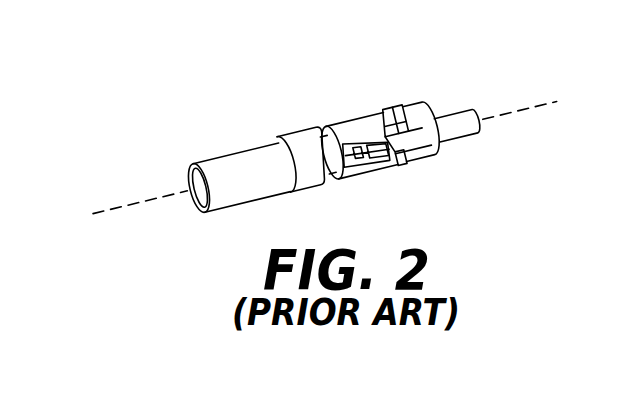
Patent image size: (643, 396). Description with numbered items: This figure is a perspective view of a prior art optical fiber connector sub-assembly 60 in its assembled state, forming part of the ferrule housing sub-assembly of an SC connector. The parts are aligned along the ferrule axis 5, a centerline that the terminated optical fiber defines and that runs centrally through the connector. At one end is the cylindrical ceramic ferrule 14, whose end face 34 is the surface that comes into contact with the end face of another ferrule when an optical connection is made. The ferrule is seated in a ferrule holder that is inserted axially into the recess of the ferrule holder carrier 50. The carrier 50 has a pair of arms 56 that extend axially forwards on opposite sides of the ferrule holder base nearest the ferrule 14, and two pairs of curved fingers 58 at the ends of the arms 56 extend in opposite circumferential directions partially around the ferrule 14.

The ferrule axis 5 is at (148, 203).
The ferrule 14 is at (458, 115).
The end face 34 is at (481, 121).
The ferrule holder carrier 50 is at (351, 124).
The arms 56 is at (390, 118).
The curved fingers 58 is at (430, 112).
The optical fiber connector sub-assembly 60 is at (282, 120).